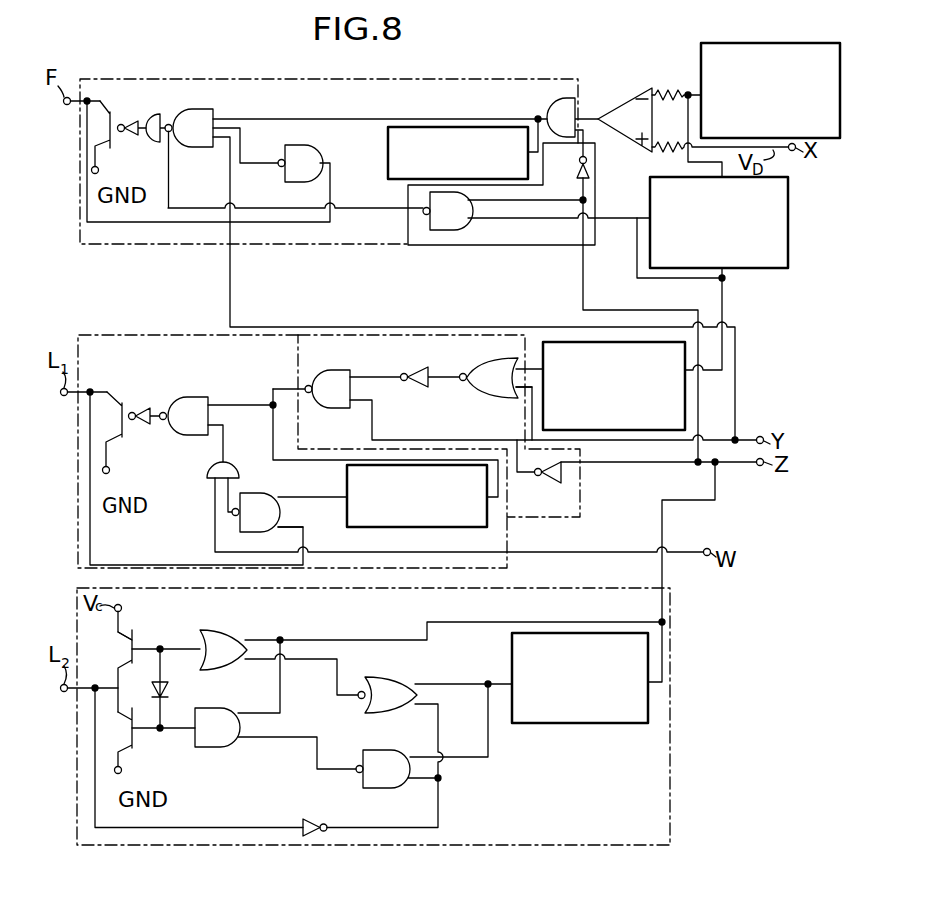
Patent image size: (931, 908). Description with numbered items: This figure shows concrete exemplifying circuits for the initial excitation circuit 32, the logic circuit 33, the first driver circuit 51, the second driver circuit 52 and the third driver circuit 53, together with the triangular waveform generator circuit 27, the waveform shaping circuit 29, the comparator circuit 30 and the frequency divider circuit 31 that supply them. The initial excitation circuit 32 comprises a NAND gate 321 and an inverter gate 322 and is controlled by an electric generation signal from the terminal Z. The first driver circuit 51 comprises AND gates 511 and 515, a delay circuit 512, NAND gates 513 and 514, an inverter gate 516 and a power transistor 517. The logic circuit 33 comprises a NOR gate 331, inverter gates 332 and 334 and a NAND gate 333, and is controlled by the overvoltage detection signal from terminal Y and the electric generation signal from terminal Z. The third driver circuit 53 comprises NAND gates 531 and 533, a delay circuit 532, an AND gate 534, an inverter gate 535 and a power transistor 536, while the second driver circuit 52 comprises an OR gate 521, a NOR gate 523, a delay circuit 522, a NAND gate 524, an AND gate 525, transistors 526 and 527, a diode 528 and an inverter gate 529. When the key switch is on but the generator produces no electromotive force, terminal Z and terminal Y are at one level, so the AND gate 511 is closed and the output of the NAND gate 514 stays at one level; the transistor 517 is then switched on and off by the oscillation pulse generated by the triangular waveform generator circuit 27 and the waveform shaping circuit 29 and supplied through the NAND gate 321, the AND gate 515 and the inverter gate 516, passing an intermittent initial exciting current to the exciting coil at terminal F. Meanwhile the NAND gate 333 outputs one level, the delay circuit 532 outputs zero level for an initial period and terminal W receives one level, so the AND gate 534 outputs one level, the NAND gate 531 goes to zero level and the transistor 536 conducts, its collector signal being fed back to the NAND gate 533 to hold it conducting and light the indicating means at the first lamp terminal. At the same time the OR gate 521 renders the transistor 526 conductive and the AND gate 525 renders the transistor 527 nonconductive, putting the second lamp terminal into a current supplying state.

The triangular waveform generator circuit 27 is at (755, 43).
The waveform shaping circuit 29 is at (788, 218).
The comparator circuit 30 is at (623, 106).
The frequency divider circuit 31 is at (685, 401).
The initial excitation circuit 32 is at (568, 247).
The logic circuit 33 is at (581, 467).
The first driver circuit 51 is at (306, 78).
The second driver circuit 52 is at (228, 845).
The third driver circuit 53 is at (168, 334).
The NAND gate 321 is at (453, 230).
The inverter gate 322 is at (590, 168).
The NOR gate 331 is at (492, 399).
The inverter gate 332 is at (426, 367).
The NAND gate 333 is at (333, 371).
The inverter gate 334 is at (548, 483).
The AND gate 511 is at (554, 101).
The delay circuit 512 is at (464, 127).
The NAND gate 513 is at (297, 146).
The NAND gate 514 is at (208, 109).
The AND gate 515 is at (157, 113).
The inverter gate 516 is at (130, 118).
The power transistor 517 is at (105, 108).
The OR gate 521 is at (220, 630).
The delay circuit 522 is at (560, 723).
The NOR gate 523 is at (372, 684).
The NAND gate 524 is at (383, 788).
The AND gate 525 is at (227, 747).
The transistor 526 is at (137, 642).
The transistor 527 is at (137, 736).
The diode 528 is at (170, 688).
The inverter gate 529 is at (318, 811).
The NAND gate 531 is at (188, 397).
The delay circuit 532 is at (350, 528).
The NAND gate 533 is at (251, 494).
The AND gate 534 is at (207, 479).
The inverter gate 535 is at (143, 425).
The power transistor 536 is at (122, 400).